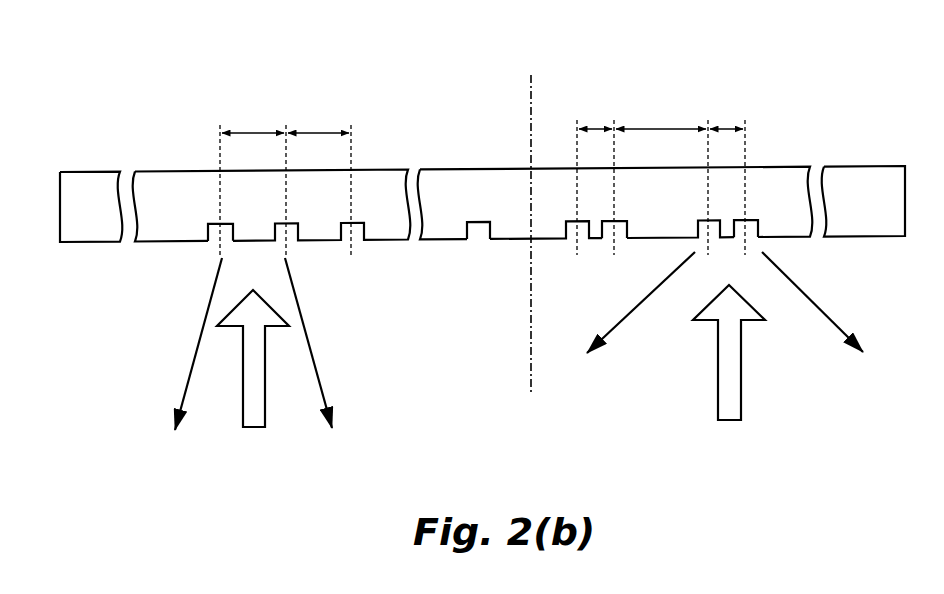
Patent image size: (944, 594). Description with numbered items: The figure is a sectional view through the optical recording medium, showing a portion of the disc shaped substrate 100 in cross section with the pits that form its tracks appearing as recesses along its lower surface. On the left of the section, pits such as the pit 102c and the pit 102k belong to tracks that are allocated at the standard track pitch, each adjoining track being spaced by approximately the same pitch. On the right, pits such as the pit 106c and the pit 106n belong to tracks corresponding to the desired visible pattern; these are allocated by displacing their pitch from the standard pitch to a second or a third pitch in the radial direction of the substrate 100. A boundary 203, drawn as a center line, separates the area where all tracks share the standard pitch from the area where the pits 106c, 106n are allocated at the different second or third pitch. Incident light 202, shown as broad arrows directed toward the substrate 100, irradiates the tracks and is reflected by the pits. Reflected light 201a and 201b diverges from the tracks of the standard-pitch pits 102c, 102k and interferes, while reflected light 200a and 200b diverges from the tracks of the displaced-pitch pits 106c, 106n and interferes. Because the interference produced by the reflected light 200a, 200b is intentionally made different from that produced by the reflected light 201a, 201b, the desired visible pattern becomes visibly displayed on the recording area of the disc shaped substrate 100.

The disc shaped substrate 100 is at (686, 53).
The pit 102c is at (222, 241).
The pit 102k is at (480, 238).
The pit 106c is at (612, 238).
The pit 106n is at (750, 238).
The reflected light 201a is at (201, 333).
The reflected light 201b is at (307, 337).
The reflected light 200a is at (635, 308).
The reflected light 200b is at (813, 303).
The incident light 202 is at (243, 417).
The boundary 203 is at (528, 355).